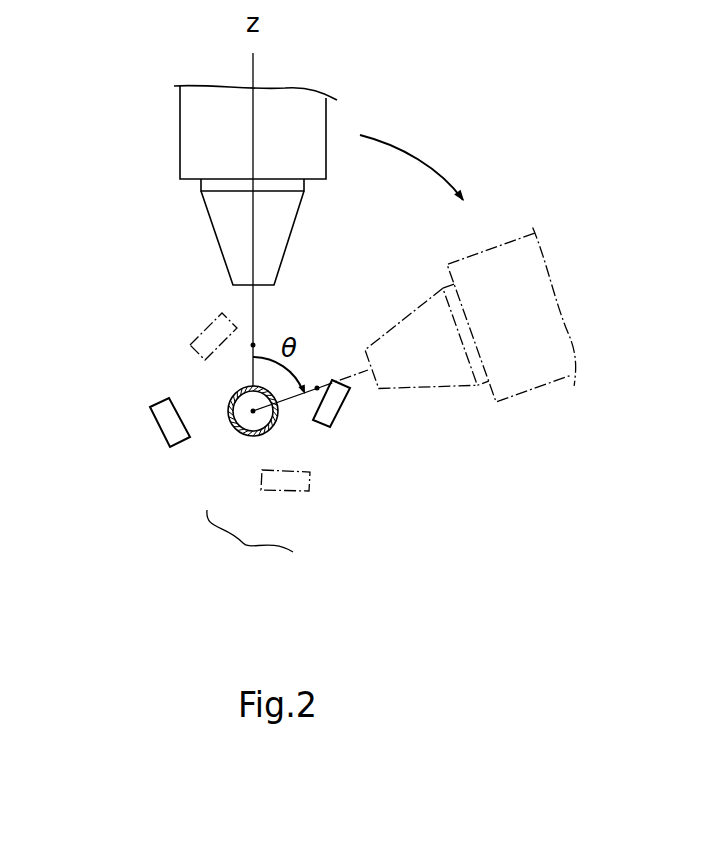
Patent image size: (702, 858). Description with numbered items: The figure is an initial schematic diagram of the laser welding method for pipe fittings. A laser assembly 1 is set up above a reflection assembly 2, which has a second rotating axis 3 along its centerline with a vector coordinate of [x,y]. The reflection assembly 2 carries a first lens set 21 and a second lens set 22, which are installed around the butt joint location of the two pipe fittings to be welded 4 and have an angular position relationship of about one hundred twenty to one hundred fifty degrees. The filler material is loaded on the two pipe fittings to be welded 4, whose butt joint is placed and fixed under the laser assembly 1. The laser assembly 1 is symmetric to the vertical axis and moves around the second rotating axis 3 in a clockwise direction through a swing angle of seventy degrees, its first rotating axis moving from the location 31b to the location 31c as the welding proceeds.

The laser assembly 1 is at (177, 151).
The reflection assembly 2 is at (250, 541).
The second rotating axis 3 is at (253, 411).
The two pipe fittings to be welded 4 is at (273, 427).
The first lens set 21 is at (203, 338).
The second lens set 22 is at (337, 423).
The first rotating axis location 31b is at (253, 345).
The first rotating axis location 31c is at (317, 388).